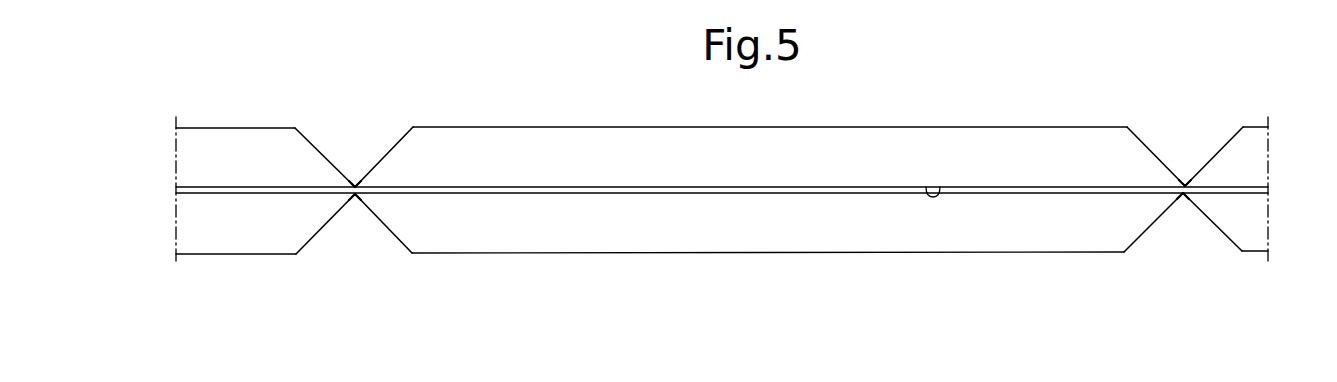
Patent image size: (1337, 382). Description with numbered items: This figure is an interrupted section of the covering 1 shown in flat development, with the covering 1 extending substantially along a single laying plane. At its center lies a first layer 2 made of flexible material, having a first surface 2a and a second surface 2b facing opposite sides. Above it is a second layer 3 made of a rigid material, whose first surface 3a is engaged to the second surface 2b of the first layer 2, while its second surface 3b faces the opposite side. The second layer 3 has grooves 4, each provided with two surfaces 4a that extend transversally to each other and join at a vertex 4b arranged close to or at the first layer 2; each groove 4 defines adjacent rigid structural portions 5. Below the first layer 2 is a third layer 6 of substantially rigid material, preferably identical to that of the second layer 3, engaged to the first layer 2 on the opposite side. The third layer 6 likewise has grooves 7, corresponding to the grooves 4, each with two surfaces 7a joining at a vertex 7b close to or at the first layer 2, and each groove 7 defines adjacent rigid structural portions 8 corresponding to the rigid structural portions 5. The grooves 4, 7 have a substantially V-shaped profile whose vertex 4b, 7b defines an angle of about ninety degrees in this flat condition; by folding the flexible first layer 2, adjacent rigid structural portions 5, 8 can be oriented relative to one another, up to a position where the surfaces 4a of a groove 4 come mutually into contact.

The covering 1 is at (1036, 104).
The first layer 2 is at (893, 193).
The first surface of the first layer 2a is at (639, 194).
The second surface of the first layer 2b is at (575, 187).
The second layer 3 is at (848, 162).
The first surface of the second layer 3a is at (938, 187).
The second surface of the second layer 3b is at (905, 127).
The groove 4 is at (380, 160).
The surfaces of the groove 4a is at (311, 132).
The vertex of the groove 4b is at (352, 186).
The rigid structural portion 5 is at (236, 142).
The third layer 6 is at (796, 228).
The groove 7 is at (375, 218).
The surfaces of the groove 7a is at (308, 252).
The vertex of the groove 7b is at (355, 195).
The rigid structural portion 8 is at (225, 231).